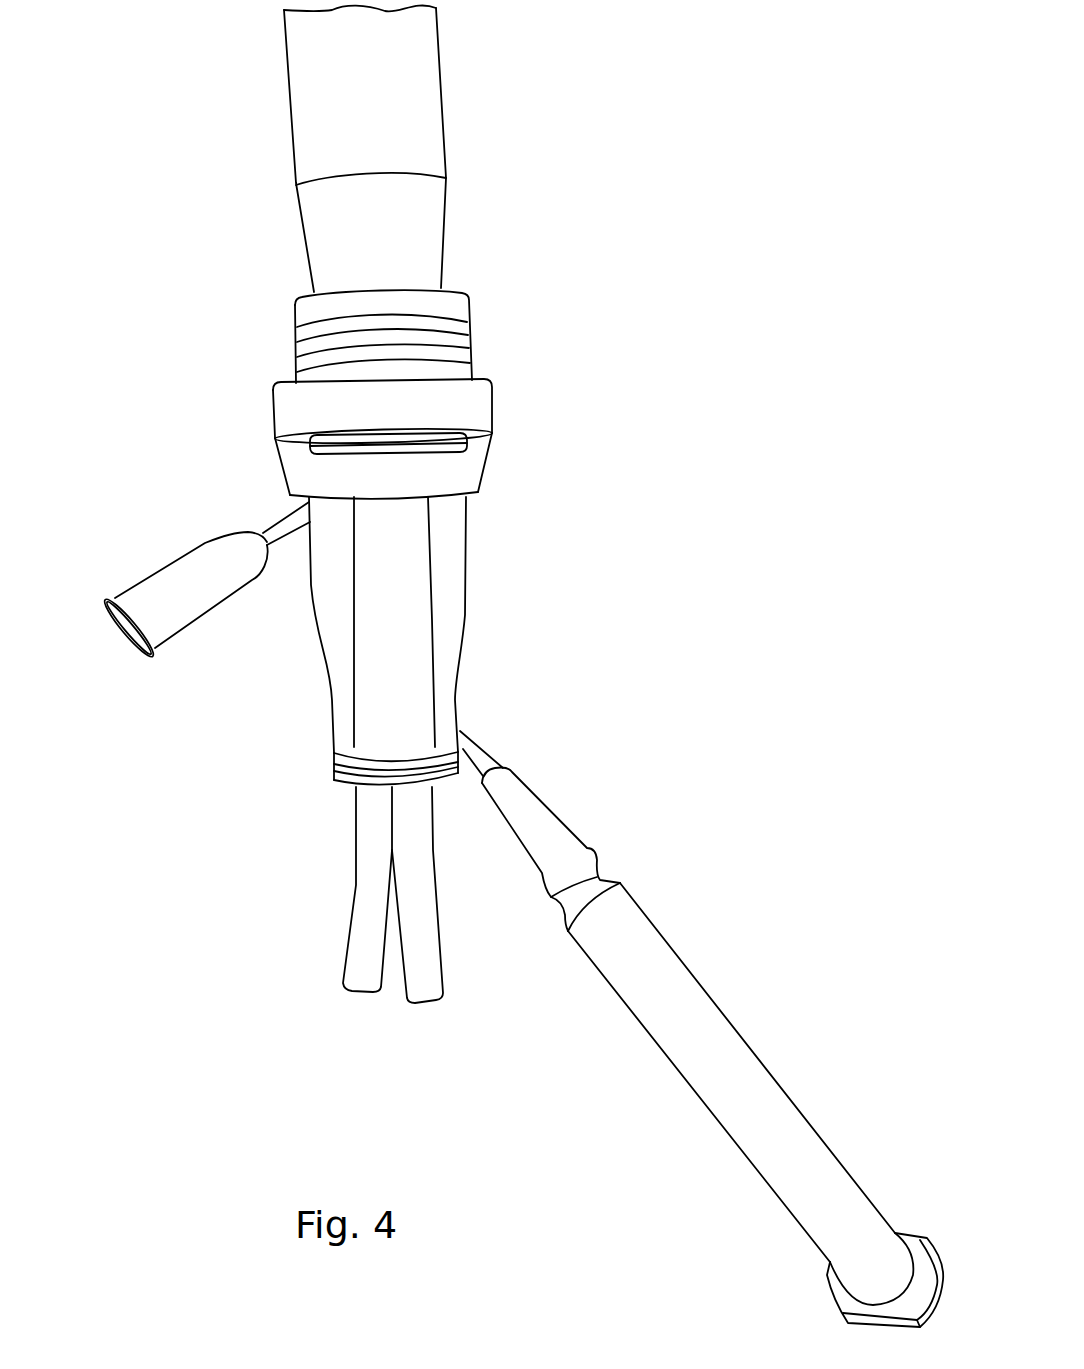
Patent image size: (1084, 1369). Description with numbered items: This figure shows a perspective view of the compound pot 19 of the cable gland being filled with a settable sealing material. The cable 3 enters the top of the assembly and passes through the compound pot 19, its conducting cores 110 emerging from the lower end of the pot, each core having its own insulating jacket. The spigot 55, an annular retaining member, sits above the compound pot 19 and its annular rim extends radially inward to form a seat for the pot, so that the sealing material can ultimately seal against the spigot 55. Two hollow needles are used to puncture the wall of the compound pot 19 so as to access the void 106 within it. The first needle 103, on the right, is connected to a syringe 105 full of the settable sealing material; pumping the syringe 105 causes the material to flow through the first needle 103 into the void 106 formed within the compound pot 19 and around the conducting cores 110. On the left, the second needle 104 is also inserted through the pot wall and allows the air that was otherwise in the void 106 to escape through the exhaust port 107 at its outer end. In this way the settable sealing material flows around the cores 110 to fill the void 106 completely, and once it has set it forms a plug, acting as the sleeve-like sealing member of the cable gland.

The cable 3 is at (305, 133).
The spigot 55 is at (308, 410).
The compound pot 19 is at (305, 468).
The void 106 is at (453, 555).
The conducting cores 110 is at (418, 943).
The second needle 104 is at (298, 505).
The exhaust port 107 is at (145, 617).
The first needle 103 is at (468, 752).
The syringe 105 is at (598, 890).